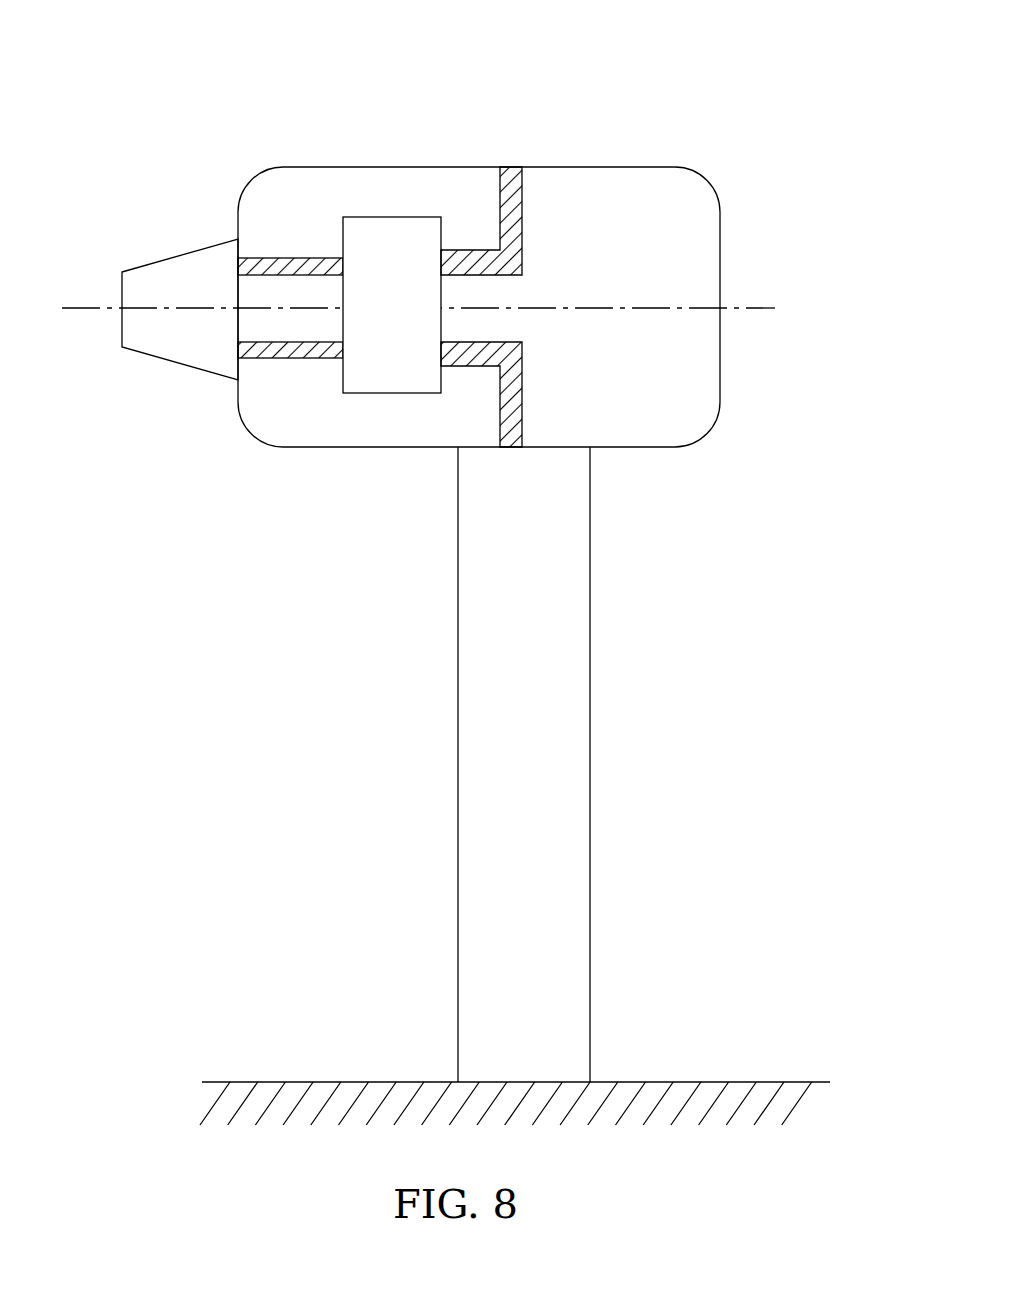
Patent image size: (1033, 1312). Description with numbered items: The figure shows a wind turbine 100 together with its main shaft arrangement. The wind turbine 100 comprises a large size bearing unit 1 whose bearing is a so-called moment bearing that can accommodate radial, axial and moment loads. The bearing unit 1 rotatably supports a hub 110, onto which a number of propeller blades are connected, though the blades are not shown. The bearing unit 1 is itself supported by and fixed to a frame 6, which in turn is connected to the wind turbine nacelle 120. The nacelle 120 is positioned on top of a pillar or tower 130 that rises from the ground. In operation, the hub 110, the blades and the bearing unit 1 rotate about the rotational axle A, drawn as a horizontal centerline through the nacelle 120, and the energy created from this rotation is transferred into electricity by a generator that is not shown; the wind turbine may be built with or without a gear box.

The wind turbine 100 is at (441, 543).
The hub 110 is at (180, 251).
The nacelle 120 is at (710, 183).
The tower 130 is at (590, 684).
The bearing unit 1 is at (390, 217).
The frame 6 is at (522, 220).